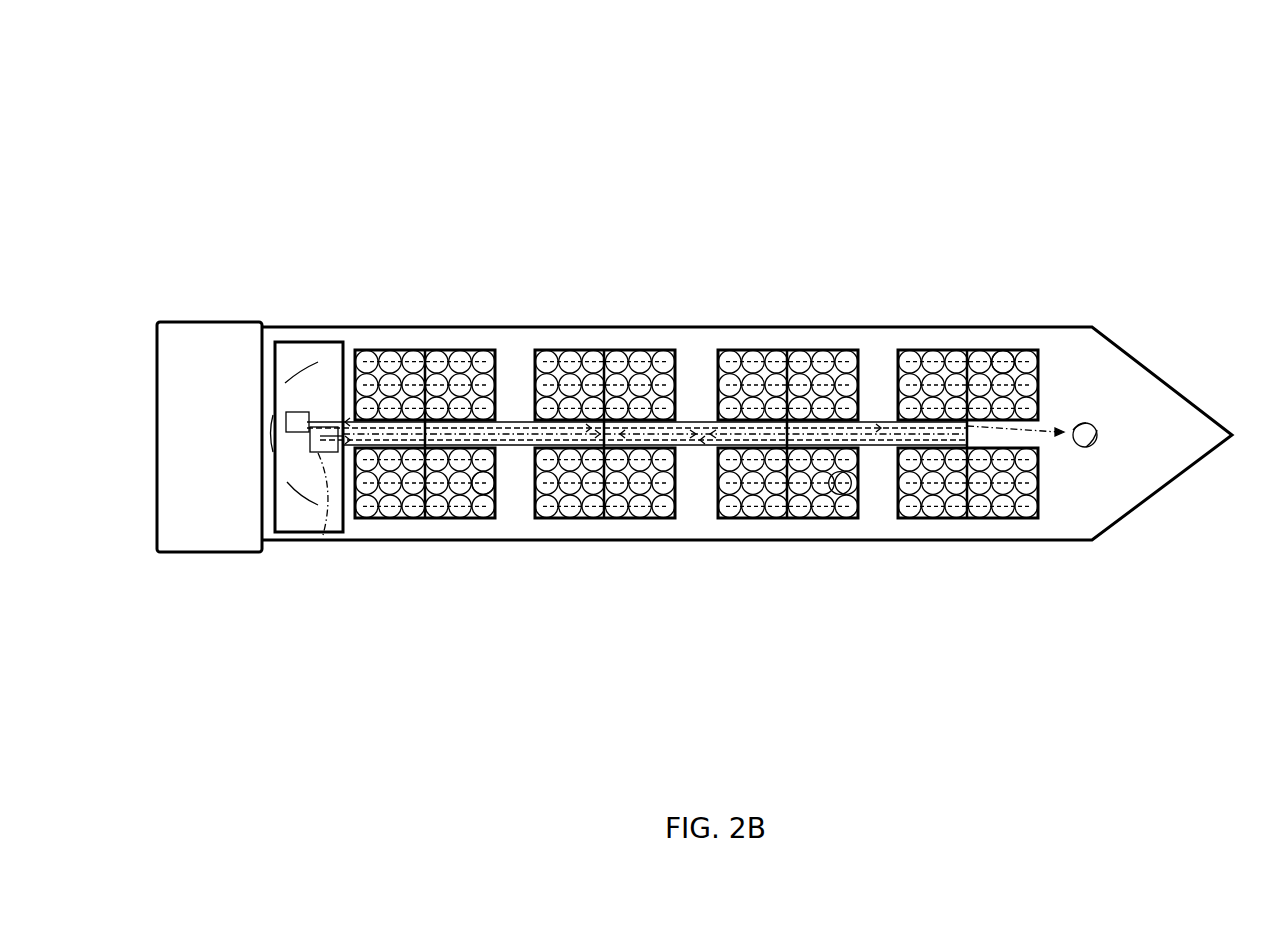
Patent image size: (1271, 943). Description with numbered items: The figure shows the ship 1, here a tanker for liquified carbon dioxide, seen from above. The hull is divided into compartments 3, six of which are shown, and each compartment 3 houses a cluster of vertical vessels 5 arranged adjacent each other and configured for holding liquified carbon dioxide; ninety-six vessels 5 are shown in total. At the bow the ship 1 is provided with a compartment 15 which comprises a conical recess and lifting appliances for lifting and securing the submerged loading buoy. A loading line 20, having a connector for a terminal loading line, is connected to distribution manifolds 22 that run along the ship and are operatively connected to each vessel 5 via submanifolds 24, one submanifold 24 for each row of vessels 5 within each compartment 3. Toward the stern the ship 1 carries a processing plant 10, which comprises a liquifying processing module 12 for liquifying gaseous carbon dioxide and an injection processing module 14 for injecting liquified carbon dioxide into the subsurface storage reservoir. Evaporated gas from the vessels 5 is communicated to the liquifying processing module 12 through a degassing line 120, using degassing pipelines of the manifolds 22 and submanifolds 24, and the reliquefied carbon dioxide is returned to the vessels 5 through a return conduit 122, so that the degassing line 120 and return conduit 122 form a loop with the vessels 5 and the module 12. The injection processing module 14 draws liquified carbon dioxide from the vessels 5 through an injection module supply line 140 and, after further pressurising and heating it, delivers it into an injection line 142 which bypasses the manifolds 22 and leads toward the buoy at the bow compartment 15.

The ship 1 is at (204, 176).
The compartment 3 is at (862, 372).
The vertical vessel 5 is at (420, 327).
The processing plant 10 is at (305, 342).
The liquifying processing module 12 is at (327, 530).
The injection processing module 14 is at (297, 410).
The compartment 15 is at (1097, 428).
The loading line 20 is at (347, 450).
The distribution manifold 22 is at (415, 485).
The submanifold 24 is at (478, 480).
The degassing line 120 is at (680, 442).
The return conduit 122 is at (707, 442).
The injection module supply line 140 is at (506, 420).
The injection line 142 is at (1049, 428).